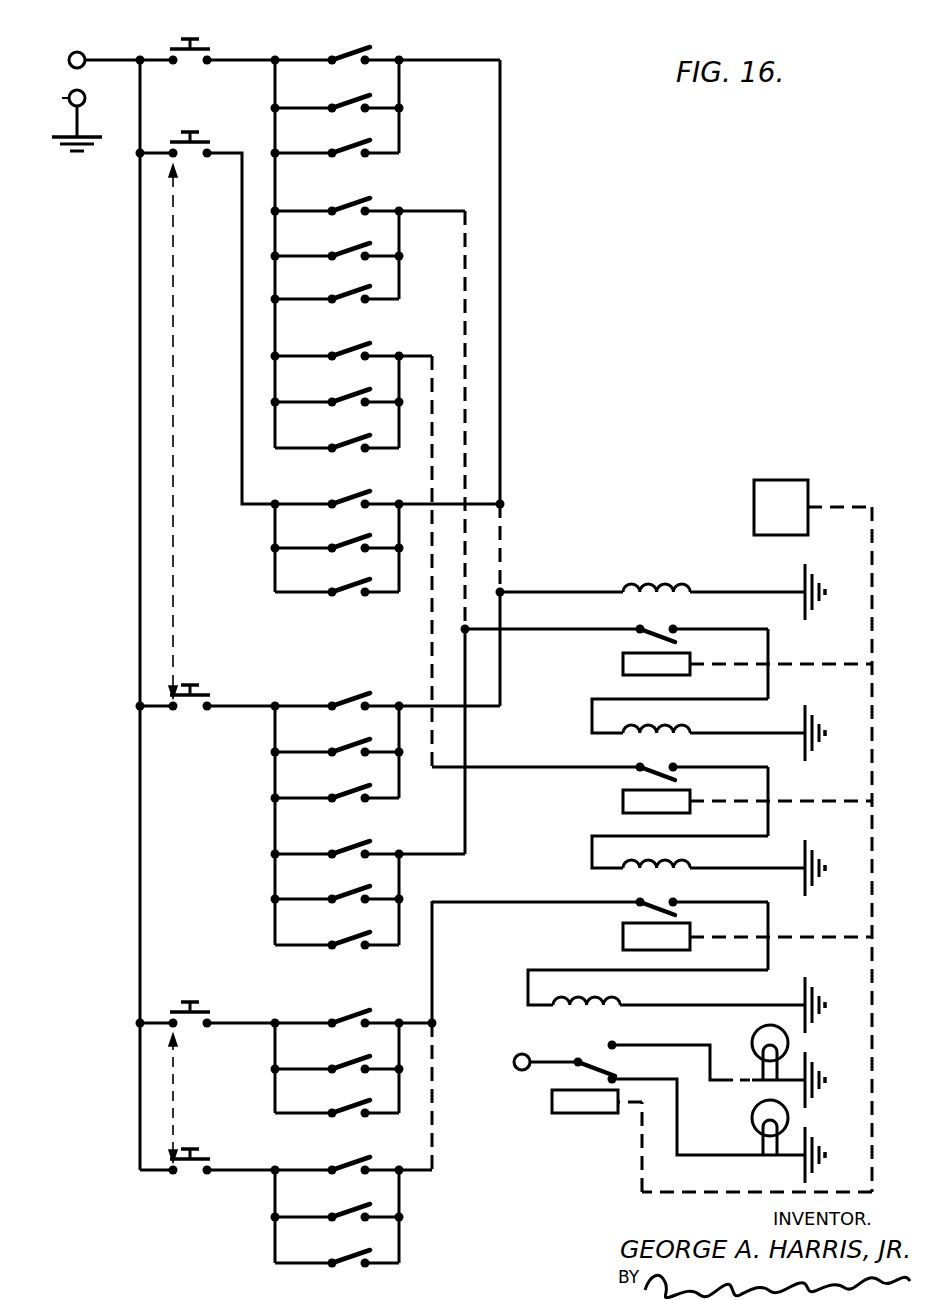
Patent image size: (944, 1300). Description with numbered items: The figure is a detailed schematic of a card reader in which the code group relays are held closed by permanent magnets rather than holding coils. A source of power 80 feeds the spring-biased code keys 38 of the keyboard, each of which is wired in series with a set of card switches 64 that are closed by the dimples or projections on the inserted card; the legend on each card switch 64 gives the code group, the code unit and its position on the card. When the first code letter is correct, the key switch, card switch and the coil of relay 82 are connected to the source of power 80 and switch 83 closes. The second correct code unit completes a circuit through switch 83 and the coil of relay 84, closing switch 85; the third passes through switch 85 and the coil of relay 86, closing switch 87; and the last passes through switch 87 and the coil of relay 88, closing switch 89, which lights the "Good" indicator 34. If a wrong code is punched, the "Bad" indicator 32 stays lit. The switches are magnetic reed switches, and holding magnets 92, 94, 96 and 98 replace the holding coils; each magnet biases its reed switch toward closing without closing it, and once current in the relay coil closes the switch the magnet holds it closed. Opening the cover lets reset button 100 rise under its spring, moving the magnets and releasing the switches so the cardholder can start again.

The "Bad" indicator 32 is at (792, 1118).
The "Good" indicator 34 is at (792, 1043).
The code keys 38 is at (195, 55).
The card switches 64 is at (352, 295).
The source of power 80 is at (70, 74).
The relay 82 is at (686, 584).
The switch 83 is at (650, 640).
The relay 84 is at (688, 728).
The switch 85 is at (652, 777).
The relay 86 is at (688, 862).
The switch 87 is at (650, 910).
The relay 88 is at (620, 999).
The switch 89 is at (590, 1060).
The holding magnet 92 is at (622, 674).
The holding magnet 94 is at (622, 813).
The holding magnet 96 is at (630, 951).
The holding magnet 98 is at (570, 1117).
The reset button 100 is at (772, 478).